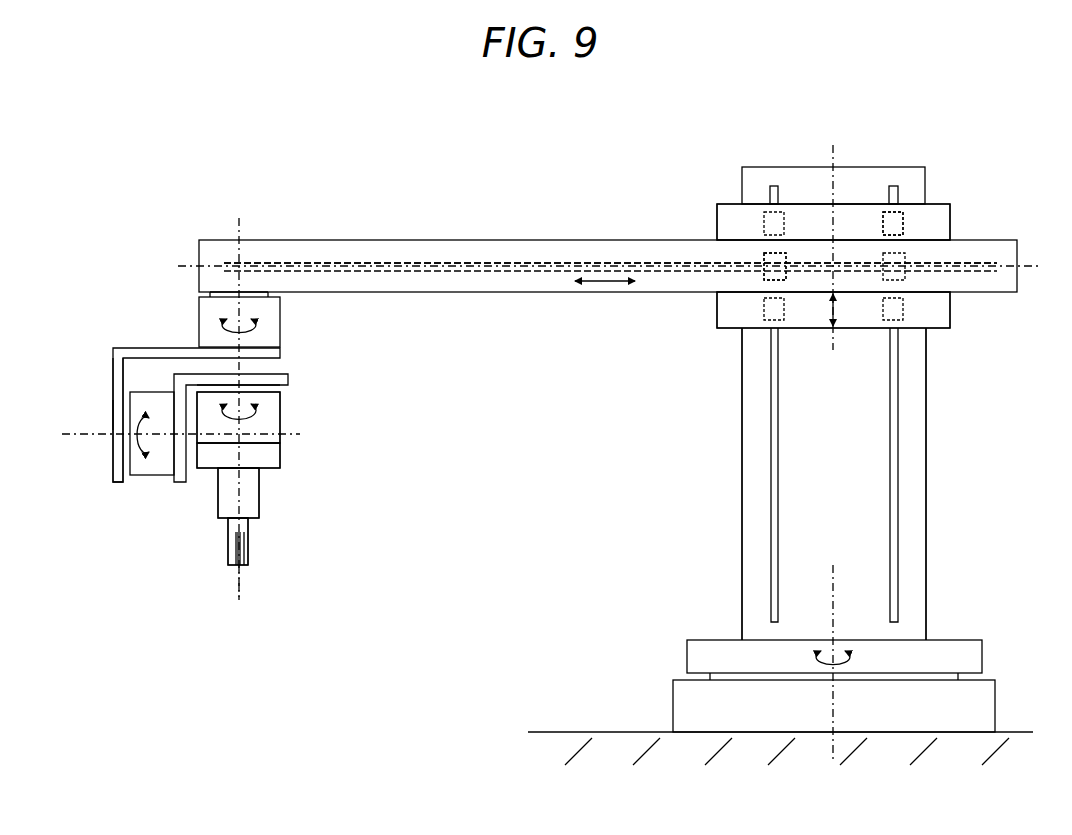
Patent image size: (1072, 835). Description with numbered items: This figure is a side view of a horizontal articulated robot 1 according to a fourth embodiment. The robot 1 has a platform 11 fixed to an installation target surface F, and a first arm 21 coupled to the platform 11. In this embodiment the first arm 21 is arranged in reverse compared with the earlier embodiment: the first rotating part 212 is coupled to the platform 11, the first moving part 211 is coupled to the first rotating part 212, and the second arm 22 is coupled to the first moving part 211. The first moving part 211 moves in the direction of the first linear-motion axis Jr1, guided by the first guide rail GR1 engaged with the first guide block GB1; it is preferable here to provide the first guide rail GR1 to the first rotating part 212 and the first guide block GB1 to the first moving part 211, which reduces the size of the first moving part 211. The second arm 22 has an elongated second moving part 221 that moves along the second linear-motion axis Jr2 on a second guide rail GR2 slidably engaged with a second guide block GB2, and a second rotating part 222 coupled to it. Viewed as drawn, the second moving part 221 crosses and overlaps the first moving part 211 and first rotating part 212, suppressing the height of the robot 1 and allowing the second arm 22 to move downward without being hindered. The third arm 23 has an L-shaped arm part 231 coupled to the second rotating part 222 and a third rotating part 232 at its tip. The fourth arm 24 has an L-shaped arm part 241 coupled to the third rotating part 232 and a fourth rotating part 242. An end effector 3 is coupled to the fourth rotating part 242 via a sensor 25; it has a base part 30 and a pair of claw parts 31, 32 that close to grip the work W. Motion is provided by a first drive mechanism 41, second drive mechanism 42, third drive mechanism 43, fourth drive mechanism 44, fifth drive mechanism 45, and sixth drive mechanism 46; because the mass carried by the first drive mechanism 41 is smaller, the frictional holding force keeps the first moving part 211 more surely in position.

The robot 1 is at (439, 156).
The platform 11 is at (978, 707).
The first arm 21 is at (740, 516).
The first moving part 211 is at (935, 222).
The first rotating part 212 is at (926, 476).
The second arm 22 is at (495, 238).
The second moving part 221 is at (512, 282).
The second rotating part 222 is at (272, 315).
The third arm 23 is at (133, 346).
The arm part 231 is at (113, 466).
The third rotating part 232 is at (150, 463).
The fourth arm 24 is at (283, 400).
The arm part 241 is at (288, 376).
The fourth rotating part 242 is at (270, 418).
The sensor 25 is at (271, 457).
The end effector 3 is at (264, 507).
The base part 30 is at (250, 483).
The claw part 31 is at (228, 545).
The claw part 32 is at (248, 533).
The work W is at (250, 552).
The first drive mechanism 41 is at (848, 222).
The second drive mechanism 42 is at (714, 697).
The third drive mechanism 43 is at (813, 256).
The fourth drive mechanism 44 is at (252, 290).
The fifth drive mechanism 45 is at (124, 410).
The sixth drive mechanism 46 is at (218, 388).
The first guide block GB1 is at (768, 218).
The second guide block GB2 is at (764, 262).
The first guide rail GR1 is at (771, 390).
The second guide rail GR2 is at (596, 262).
The first linear-motion axis Jr1 is at (832, 333).
The second linear-motion axis Jr2 is at (622, 275).
The installation target surface F is at (607, 726).